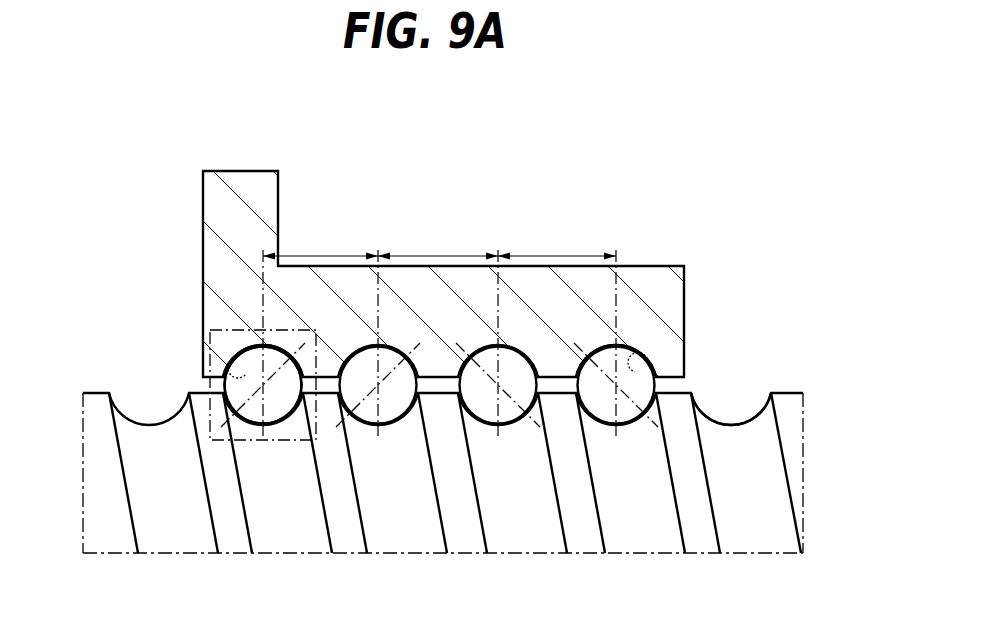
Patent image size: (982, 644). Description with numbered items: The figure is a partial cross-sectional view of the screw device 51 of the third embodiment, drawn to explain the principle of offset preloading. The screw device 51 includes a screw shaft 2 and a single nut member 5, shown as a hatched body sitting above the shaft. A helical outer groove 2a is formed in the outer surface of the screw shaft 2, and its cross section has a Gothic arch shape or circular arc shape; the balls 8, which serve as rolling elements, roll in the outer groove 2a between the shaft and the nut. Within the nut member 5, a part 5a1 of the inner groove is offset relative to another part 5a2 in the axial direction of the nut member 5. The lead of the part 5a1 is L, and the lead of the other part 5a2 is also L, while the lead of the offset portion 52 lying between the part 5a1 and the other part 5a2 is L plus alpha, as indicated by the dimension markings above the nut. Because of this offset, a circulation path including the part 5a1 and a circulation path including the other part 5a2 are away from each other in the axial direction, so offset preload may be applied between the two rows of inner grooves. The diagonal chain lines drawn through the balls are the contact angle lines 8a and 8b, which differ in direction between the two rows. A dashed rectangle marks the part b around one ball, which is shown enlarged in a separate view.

The screw device 51 is at (457, 100).
The nut member 5 is at (431, 275).
The offset portion 52 is at (460, 310).
The part of the inner groove 5a1 is at (641, 369).
The other part of the inner groove 5a2 is at (228, 363).
The screw shaft 2 is at (793, 393).
The outer groove 2a is at (726, 419).
The ball 8 is at (272, 410).
The contact angle line 8a is at (632, 403).
The contact angle line 8b is at (278, 372).
The part b is at (265, 342).